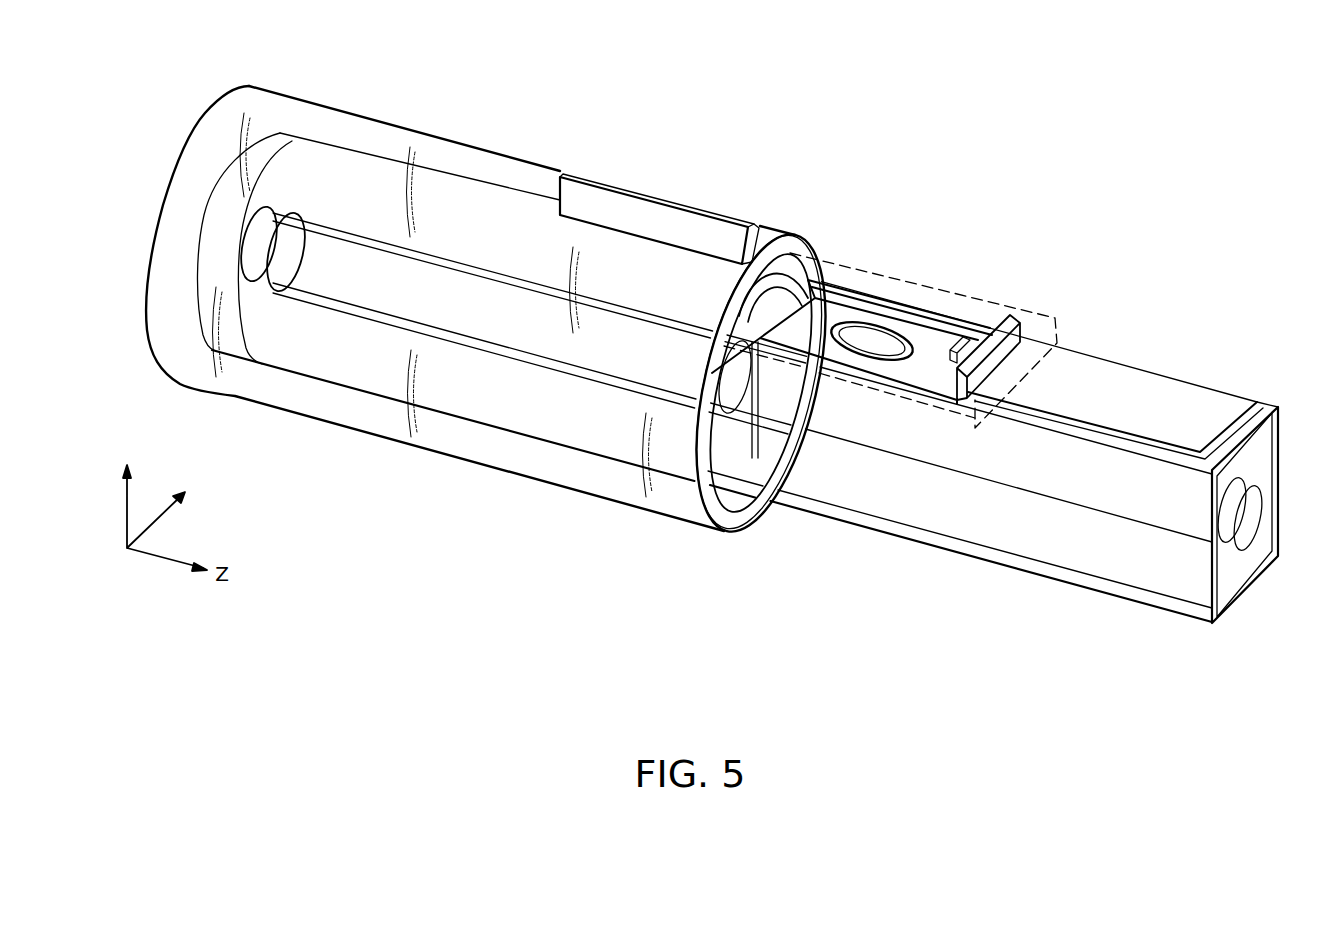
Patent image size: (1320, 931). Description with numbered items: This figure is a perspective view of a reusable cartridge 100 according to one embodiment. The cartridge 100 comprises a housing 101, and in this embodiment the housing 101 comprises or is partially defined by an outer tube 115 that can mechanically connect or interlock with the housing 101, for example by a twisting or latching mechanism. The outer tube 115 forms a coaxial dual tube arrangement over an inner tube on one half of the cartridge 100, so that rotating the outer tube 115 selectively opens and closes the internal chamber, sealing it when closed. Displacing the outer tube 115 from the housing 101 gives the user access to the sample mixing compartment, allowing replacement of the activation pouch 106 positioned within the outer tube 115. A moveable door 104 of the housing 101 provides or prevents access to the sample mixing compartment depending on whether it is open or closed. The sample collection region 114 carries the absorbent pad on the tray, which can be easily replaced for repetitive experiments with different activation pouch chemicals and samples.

The cartridge 100 is at (712, 378).
The housing 101 is at (1143, 600).
The moveable door 104 is at (1150, 383).
The activation pouch 106 is at (663, 203).
The sample collection region 114 is at (930, 283).
The outer tube 115 is at (518, 477).